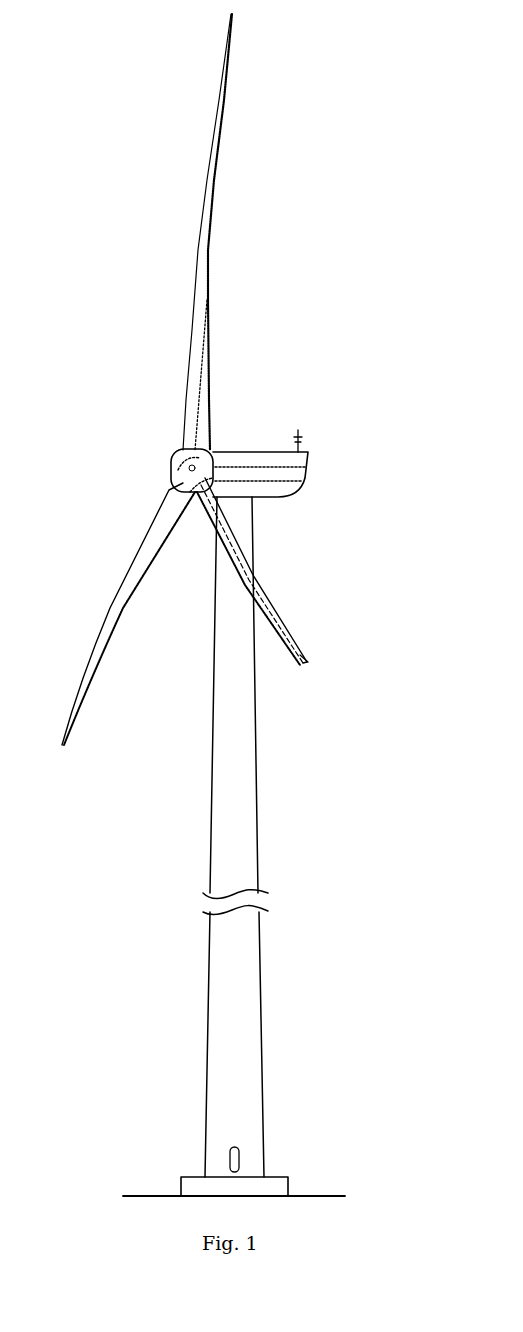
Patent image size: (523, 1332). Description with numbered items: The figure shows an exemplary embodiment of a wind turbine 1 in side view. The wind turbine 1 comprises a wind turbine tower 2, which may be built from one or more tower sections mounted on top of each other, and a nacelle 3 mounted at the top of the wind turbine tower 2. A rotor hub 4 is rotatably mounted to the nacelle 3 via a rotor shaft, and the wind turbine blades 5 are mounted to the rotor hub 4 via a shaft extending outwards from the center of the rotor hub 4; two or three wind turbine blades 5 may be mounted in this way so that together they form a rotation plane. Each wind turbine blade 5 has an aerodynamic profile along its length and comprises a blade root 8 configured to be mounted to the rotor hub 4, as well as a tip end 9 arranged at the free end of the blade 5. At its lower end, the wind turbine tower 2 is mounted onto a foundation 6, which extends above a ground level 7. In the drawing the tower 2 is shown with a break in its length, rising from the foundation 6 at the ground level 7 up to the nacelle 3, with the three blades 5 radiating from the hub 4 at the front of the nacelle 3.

The wind turbine 1 is at (336, 473).
The wind turbine tower 2 is at (235, 715).
The nacelle 3 is at (258, 462).
The rotor hub 4 is at (186, 464).
The wind turbine blade 5 is at (197, 275).
The foundation 6 is at (272, 1183).
The ground level 7 is at (317, 1196).
The blade root 8 is at (192, 466).
The tip end 9 is at (308, 660).